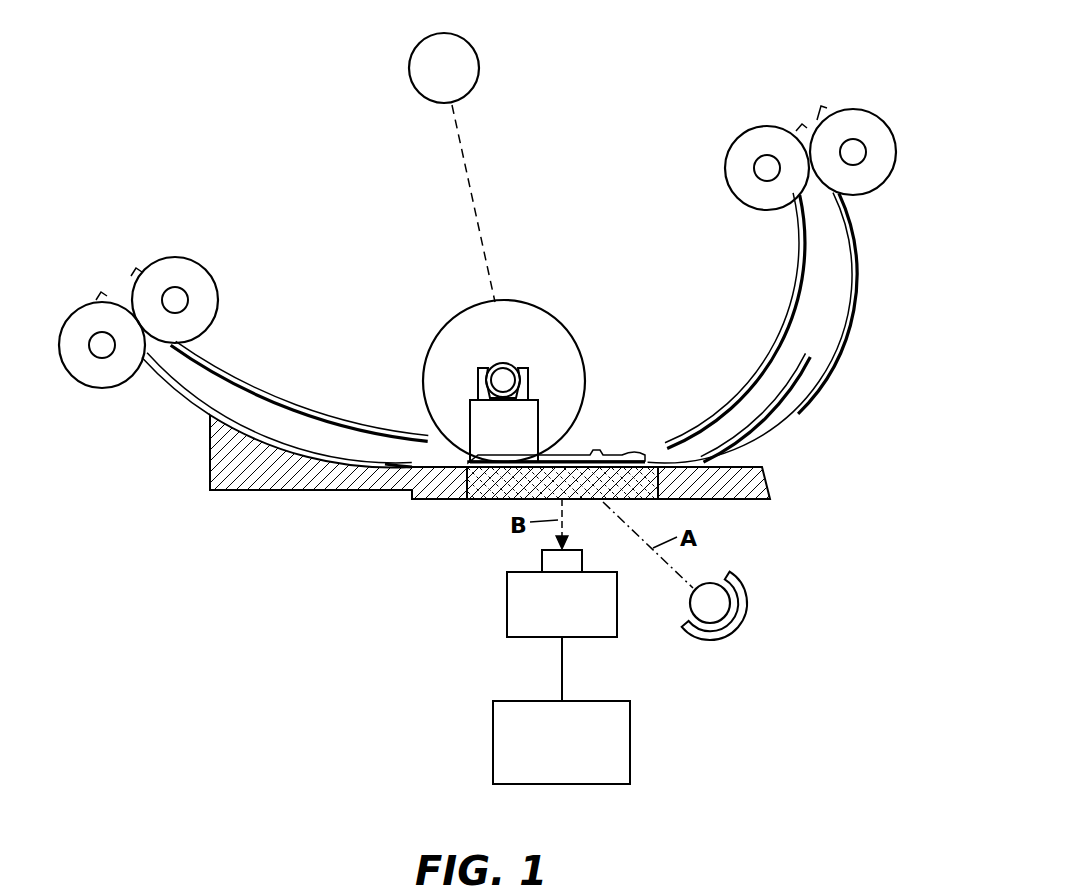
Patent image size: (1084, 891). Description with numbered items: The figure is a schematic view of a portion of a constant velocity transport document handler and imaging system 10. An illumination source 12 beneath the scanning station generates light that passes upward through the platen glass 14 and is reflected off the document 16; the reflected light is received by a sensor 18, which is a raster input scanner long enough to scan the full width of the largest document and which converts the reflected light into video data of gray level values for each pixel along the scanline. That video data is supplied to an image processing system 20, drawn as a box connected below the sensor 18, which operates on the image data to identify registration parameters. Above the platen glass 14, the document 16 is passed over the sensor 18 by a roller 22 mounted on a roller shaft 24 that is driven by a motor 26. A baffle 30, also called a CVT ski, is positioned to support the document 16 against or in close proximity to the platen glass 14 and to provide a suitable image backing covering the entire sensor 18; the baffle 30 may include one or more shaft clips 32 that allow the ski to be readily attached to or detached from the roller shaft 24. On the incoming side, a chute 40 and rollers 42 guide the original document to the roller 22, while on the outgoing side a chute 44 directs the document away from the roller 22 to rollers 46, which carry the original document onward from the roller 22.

The constant velocity transport document handler and imaging system 10 is at (337, 114).
The illumination source 12 is at (732, 607).
The platen glass 14 is at (480, 488).
The document 16 is at (775, 385).
The sensor 18 is at (523, 622).
The image processing system 20 is at (503, 767).
The roller 22 is at (460, 313).
The roller shaft 24 is at (503, 380).
The motor 26 is at (470, 63).
The baffle 30 is at (600, 453).
The shaft clips 32 is at (530, 378).
The chute 40 is at (823, 327).
The rollers 42 is at (856, 110).
The chute 44 is at (280, 407).
The rollers 46 is at (200, 280).